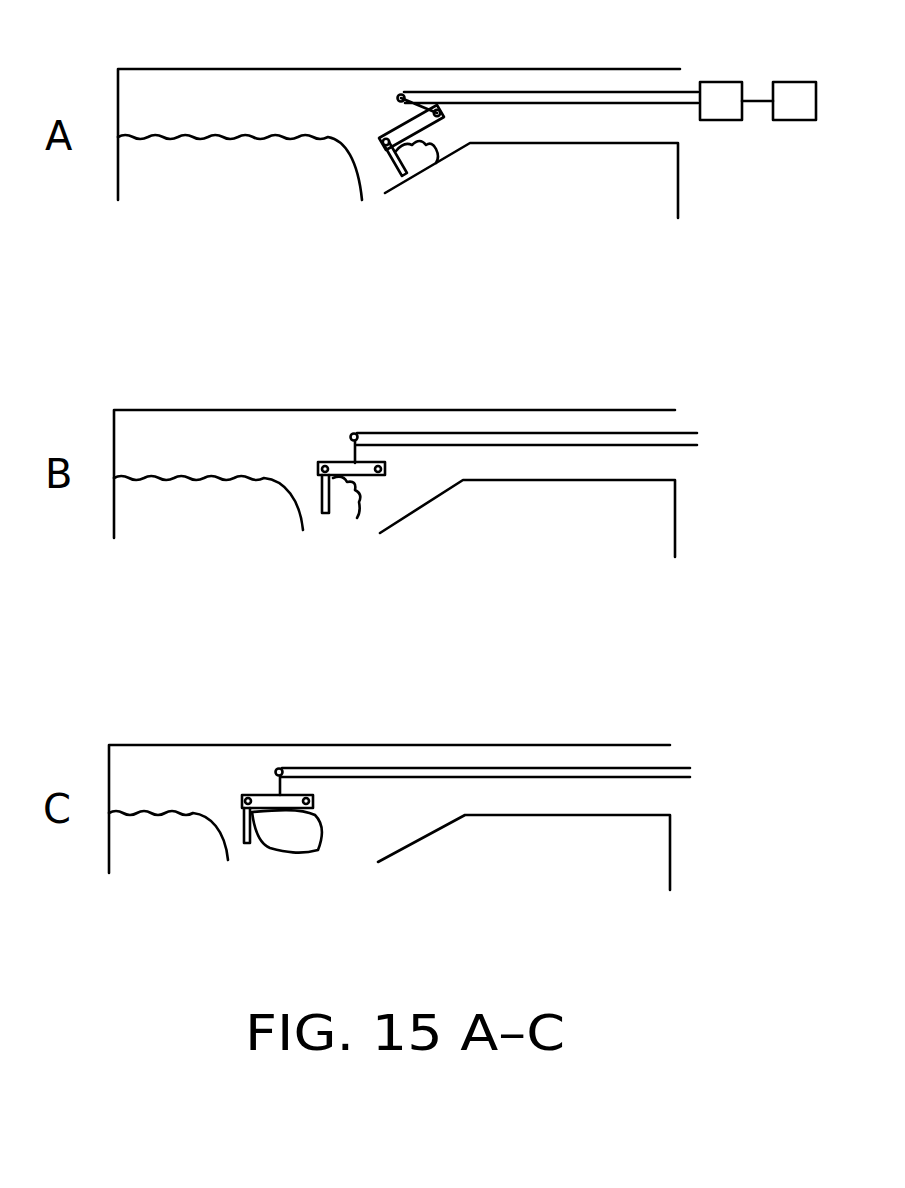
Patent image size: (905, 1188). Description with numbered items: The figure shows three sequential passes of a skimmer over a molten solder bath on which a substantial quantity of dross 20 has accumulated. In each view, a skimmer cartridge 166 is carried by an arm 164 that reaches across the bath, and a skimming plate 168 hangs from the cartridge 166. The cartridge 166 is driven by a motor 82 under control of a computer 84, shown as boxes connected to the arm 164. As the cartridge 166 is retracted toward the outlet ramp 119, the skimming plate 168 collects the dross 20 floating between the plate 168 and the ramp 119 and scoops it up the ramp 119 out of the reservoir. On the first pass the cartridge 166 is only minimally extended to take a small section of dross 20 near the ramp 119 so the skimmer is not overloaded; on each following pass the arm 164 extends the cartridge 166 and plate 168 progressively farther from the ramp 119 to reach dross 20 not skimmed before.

In FIG. 15A, the dross 20 is at (273, 160).
In FIG. 15B, the dross 20 is at (352, 515).
In FIG. 15C, the dross 20 is at (298, 845).
In FIG. 15A, the outlet ramp 119 is at (455, 150).
In FIG. 15B, the outlet ramp 119 is at (458, 487).
In FIG. 15C, the outlet ramp 119 is at (455, 820).
In FIG. 15A, the arm 164 is at (520, 92).
In FIG. 15B, the arm 164 is at (513, 432).
In FIG. 15C, the arm 164 is at (510, 768).
In FIG. 15A, the skimmer cartridge 166 is at (398, 125).
In FIG. 15B, the skimmer cartridge 166 is at (335, 466).
In FIG. 15C, the skimmer cartridge 166 is at (265, 800).
In FIG. 15A, the skimming plate 168 is at (405, 160).
In FIG. 15B, the skimming plate 168 is at (303, 505).
In FIG. 15C, the skimming plate 168 is at (240, 835).
In FIG. 15A, the motor 82 is at (736, 101).
In FIG. 15A, the computer 84 is at (794, 101).